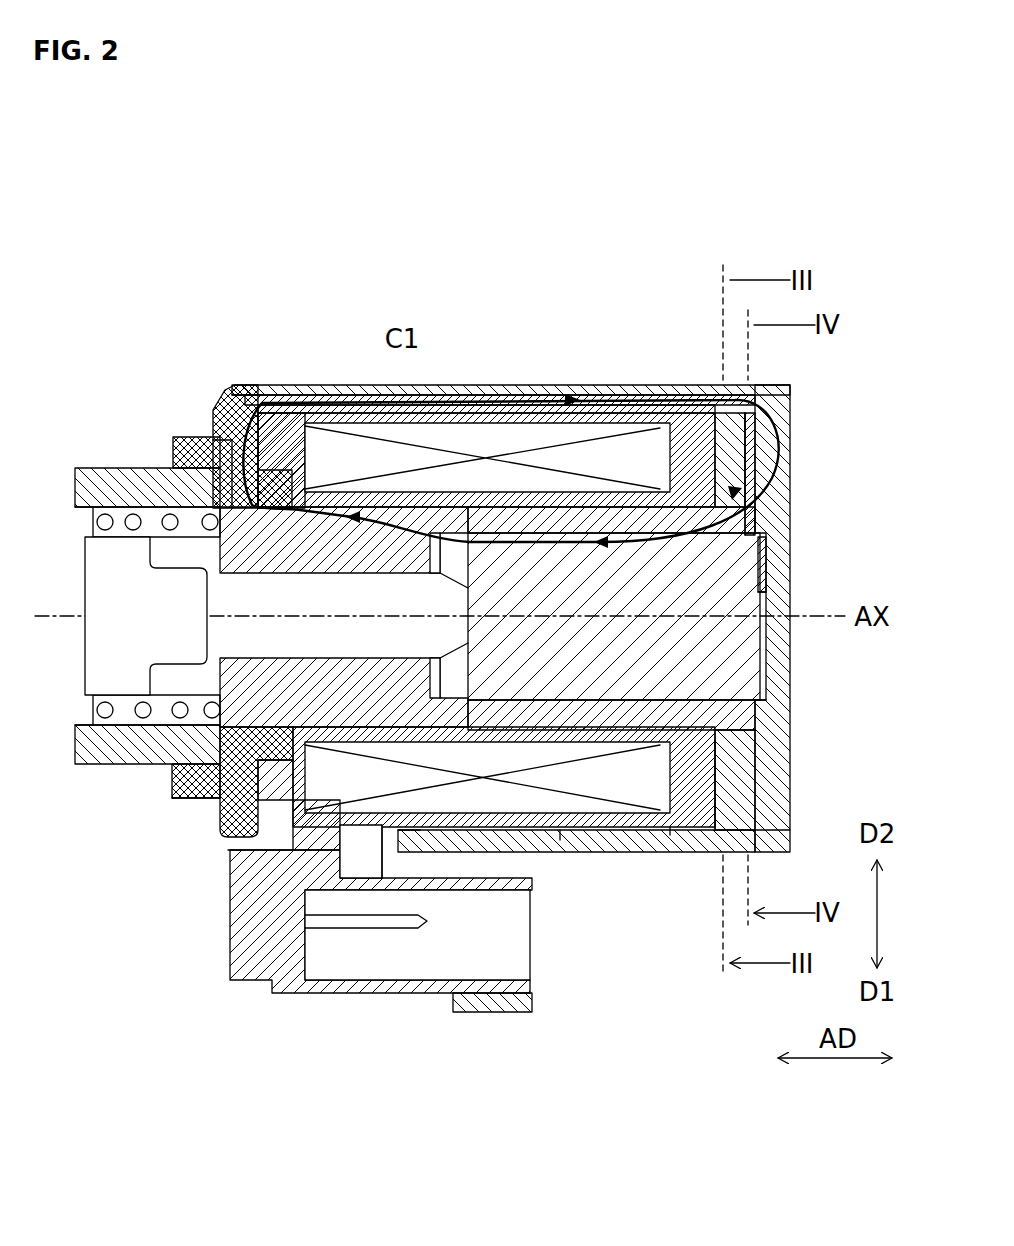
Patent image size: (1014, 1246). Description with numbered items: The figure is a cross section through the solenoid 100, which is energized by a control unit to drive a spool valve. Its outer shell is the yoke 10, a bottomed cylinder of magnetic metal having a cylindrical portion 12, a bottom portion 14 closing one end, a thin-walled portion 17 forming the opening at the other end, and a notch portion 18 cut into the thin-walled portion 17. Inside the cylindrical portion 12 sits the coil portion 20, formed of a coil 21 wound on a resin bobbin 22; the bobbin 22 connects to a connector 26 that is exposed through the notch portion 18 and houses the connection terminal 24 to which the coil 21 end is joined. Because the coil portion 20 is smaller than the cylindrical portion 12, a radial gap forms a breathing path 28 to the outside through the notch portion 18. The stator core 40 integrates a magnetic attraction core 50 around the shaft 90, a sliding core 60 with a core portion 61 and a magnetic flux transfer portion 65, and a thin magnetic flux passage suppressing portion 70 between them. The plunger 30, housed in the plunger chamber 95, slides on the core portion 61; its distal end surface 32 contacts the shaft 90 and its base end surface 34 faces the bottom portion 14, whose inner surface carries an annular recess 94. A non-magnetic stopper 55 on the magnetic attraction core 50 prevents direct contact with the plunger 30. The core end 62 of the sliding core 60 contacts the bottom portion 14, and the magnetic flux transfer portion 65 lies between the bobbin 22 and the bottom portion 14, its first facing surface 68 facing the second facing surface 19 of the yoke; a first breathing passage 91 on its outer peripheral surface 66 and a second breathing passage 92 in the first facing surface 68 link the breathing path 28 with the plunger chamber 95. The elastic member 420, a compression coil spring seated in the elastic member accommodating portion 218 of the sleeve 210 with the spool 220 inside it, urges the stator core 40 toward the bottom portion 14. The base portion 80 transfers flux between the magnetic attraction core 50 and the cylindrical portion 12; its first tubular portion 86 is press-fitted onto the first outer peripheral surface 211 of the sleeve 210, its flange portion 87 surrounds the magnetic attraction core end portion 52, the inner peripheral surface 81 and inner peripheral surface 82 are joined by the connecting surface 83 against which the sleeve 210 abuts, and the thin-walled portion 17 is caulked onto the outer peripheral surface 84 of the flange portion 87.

The solenoid 100 is at (792, 243).
The yoke 10 is at (800, 368).
The cylindrical portion 12 is at (333, 385).
The bottom portion 14 is at (785, 475).
The thin-walled portion 17 is at (218, 405).
The notch portion 18 is at (355, 905).
The second facing surface 19 is at (750, 730).
The coil portion 20 is at (548, 895).
The coil 21 is at (560, 840).
The bobbin 22 is at (670, 835).
The connection terminal 24 is at (385, 925).
The connector 26 is at (540, 1008).
The breathing path 28 is at (443, 760).
The plunger 30 is at (765, 682).
The distal end surface 32 is at (472, 545).
The base end surface 34 is at (705, 655).
The stator core 40 is at (397, 272).
The magnetic attraction core 50 is at (402, 440).
The magnetic attraction core end portion 52 is at (268, 435).
The stopper 55 is at (445, 700).
The sliding core 60 is at (700, 470).
The core portion 61 is at (770, 590).
The core end 62 is at (770, 560).
The magnetic flux transfer portion 65 is at (735, 760).
The outer peripheral surface 66 is at (758, 845).
The first facing surface 68 is at (765, 800).
The magnetic flux passage suppressing portion 70 is at (518, 500).
The base portion 80 is at (135, 920).
The inner peripheral surface 81 is at (172, 792).
The inner peripheral surface 82 is at (228, 818).
The connecting surface 83 is at (215, 765).
The outer peripheral surface 84 is at (258, 390).
The first tubular portion 86 is at (180, 800).
The flange portion 87 is at (230, 850).
The shaft 90 is at (165, 735).
The first breathing passage 91 is at (760, 390).
The second breathing passage 92 is at (750, 422).
The recess 94 is at (770, 705).
The plunger chamber 95 is at (752, 530).
The sleeve 210 is at (100, 478).
The first outer peripheral surface 211 is at (190, 450).
The elastic member accommodating portion 218 is at (150, 485).
The spool 220 is at (125, 715).
The elastic member 420 is at (80, 700).